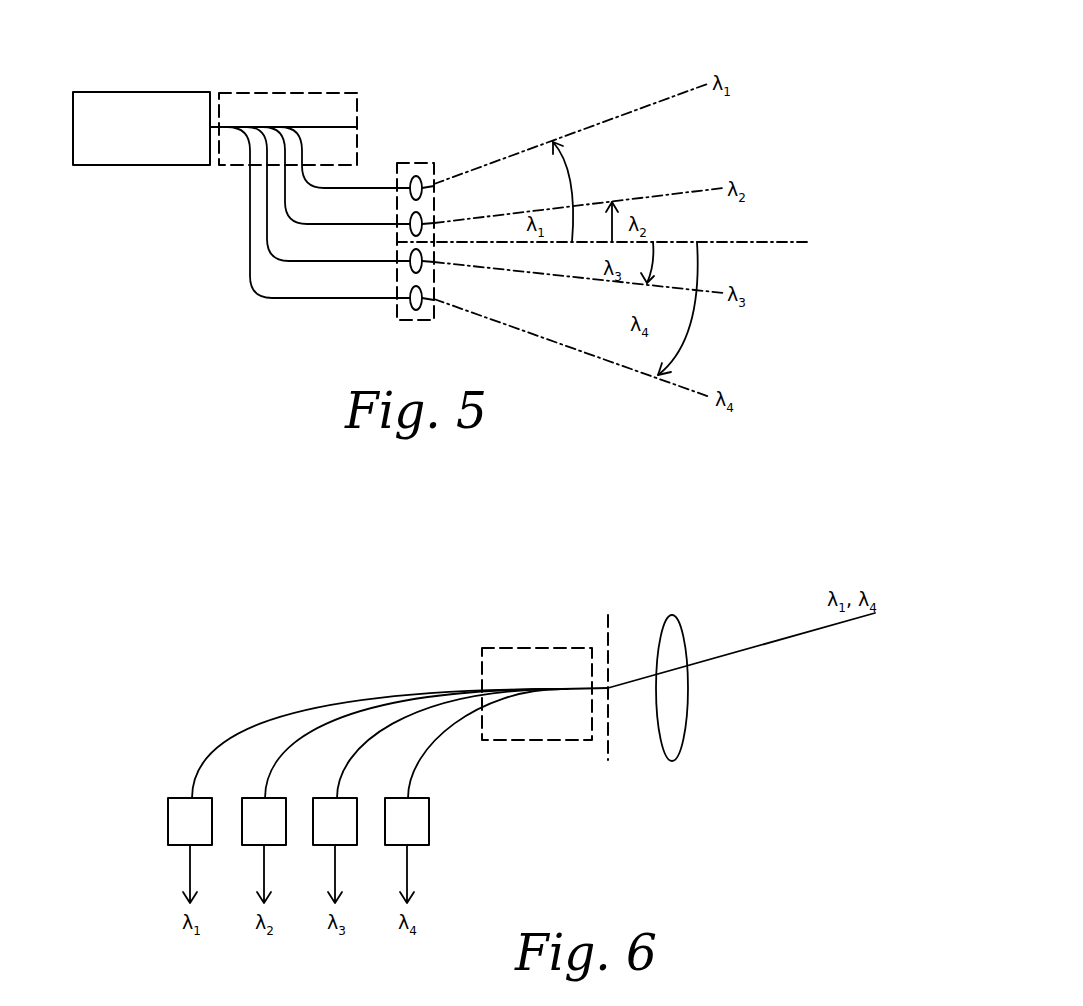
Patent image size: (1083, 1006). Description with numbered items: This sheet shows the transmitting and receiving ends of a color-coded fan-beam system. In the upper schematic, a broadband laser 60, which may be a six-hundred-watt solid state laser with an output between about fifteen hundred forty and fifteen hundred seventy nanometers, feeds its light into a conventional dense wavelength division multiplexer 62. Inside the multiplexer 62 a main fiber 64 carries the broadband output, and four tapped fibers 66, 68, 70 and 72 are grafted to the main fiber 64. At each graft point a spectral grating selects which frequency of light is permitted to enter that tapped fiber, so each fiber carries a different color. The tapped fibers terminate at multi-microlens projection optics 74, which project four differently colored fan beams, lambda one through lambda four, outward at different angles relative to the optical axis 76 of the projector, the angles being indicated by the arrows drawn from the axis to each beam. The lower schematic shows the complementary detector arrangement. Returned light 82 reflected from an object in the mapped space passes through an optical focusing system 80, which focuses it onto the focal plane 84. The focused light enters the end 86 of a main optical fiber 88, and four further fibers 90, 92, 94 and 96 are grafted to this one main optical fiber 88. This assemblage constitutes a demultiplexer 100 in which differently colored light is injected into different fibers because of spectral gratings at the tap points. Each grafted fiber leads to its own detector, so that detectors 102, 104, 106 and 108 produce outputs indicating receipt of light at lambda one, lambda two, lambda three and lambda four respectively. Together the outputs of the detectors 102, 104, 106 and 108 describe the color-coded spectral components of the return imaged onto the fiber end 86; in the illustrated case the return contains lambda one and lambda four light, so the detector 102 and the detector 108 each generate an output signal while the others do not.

In FIG. 5, the broadband laser 60 is at (133, 92).
In FIG. 5, the dense wavelength division multiplexer 62 is at (277, 93).
In FIG. 5, the main fiber 64 is at (337, 126).
In FIG. 5, the tapped fiber 66 is at (327, 300).
In FIG. 5, the tapped fiber 68 is at (342, 263).
In FIG. 5, the tapped fiber 70 is at (360, 226).
In FIG. 5, the tapped fiber 72 is at (373, 190).
In FIG. 5, the multi-microlens projection optics 74 is at (417, 163).
In FIG. 5, the optical axis 76 is at (747, 242).
In FIG. 6, the optical focusing system 80 is at (675, 700).
In FIG. 6, the returned light 82 is at (795, 638).
In FIG. 6, the focal plane 84 is at (608, 628).
In FIG. 6, the end of main optical fiber 86 is at (597, 693).
In FIG. 6, the main optical fiber 88 is at (562, 687).
In FIG. 6, the grafted fiber 90 is at (290, 718).
In FIG. 6, the grafted fiber 92 is at (383, 707).
In FIG. 6, the grafted fiber 94 is at (460, 705).
In FIG. 6, the grafted fiber 96 is at (430, 758).
In FIG. 6, the demultiplexer 100 is at (558, 648).
In FIG. 6, the detector 102 is at (183, 797).
In FIG. 6, the detector 104 is at (257, 797).
In FIG. 6, the detector 106 is at (330, 797).
In FIG. 6, the detector 108 is at (403, 797).